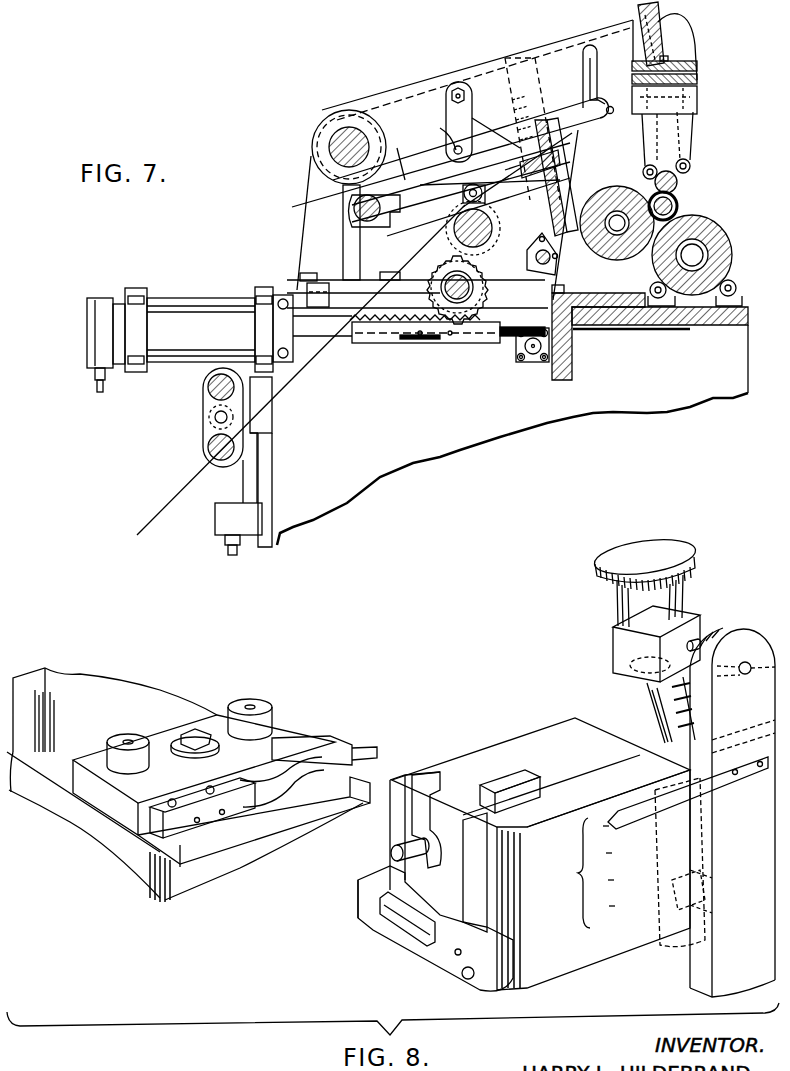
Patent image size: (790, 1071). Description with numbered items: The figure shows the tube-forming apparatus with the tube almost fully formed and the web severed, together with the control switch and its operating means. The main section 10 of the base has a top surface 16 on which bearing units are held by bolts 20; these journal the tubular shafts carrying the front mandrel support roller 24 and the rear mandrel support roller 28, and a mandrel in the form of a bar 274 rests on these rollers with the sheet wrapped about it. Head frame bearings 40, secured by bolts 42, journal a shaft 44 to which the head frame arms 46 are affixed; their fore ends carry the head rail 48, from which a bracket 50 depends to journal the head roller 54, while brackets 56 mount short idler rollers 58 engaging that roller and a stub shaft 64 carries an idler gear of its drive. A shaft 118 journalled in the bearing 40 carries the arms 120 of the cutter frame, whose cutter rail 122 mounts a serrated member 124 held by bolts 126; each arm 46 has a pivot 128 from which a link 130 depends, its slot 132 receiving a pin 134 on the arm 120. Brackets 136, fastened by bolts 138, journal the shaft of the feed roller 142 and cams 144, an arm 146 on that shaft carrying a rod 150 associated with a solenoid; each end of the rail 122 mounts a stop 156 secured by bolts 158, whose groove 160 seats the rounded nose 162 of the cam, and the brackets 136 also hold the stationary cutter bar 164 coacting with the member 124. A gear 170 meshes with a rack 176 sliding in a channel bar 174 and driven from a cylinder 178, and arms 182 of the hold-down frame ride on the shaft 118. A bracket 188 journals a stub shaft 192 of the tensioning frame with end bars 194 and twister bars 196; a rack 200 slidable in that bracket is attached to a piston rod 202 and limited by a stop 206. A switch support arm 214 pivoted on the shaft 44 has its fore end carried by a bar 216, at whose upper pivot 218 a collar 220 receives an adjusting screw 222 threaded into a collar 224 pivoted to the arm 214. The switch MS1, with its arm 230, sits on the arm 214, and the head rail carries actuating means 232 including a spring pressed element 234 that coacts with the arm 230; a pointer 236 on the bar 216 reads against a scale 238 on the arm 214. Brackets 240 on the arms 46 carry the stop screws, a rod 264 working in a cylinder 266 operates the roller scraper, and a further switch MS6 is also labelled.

In FIG. 7, the main section 10 is at (398, 416).
In FIG. 7, the top surface 16 is at (694, 325).
In FIG. 7, the bolts 20 is at (567, 291).
In FIG. 7, the front mandrel support roller 24 is at (724, 237).
In FIG. 7, the rear mandrel support roller 28 is at (619, 192).
In FIG. 7, the head frame bearings 40 is at (306, 207).
In FIG. 7, the bolts 42 is at (310, 273).
In FIG. 7, the shaft 44 is at (318, 142).
In FIG. 7, the head frame arms 46 is at (419, 93).
In FIG. 7, the head rail 48 is at (698, 77).
In FIG. 8, the head rail 48 is at (68, 822).
In FIG. 7, the bracket 50 is at (700, 145).
In FIG. 7, the head roller 54 is at (680, 183).
In FIG. 7, the brackets 56 is at (703, 125).
In FIG. 7, the short idler rollers 58 is at (697, 170).
In FIG. 7, the stub shaft 64 is at (553, 175).
In FIG. 7, the shaft 118 is at (356, 219).
In FIG. 7, the arms of cutter frame 120 is at (364, 232).
In FIG. 7, the cutter rail 122 is at (514, 199).
In FIG. 7, the member having a serrated cutting edge 124 is at (562, 180).
In FIG. 7, the bolts 126 is at (558, 164).
In FIG. 7, the pivot 128 is at (459, 80).
In FIG. 7, the link 130 is at (461, 173).
In FIG. 7, the slot 132 is at (440, 128).
In FIG. 7, the pin 134 is at (440, 165).
In FIG. 7, the brackets 136 is at (515, 279).
In FIG. 7, the bolts 138 is at (516, 350).
In FIG. 7, the feed roller 142 is at (487, 238).
In FIG. 7, the cams 144 is at (496, 124).
In FIG. 7, the arm 146 is at (407, 282).
In FIG. 7, the rod 150 is at (477, 166).
In FIG. 7, the stop 156 is at (453, 147).
In FIG. 7, the bolts 158 is at (556, 148).
In FIG. 7, the groove 160 is at (489, 124).
In FIG. 7, the rounded nose 162 is at (457, 122).
In FIG. 7, the stationary cutter bar 164 is at (542, 254).
In FIG. 7, the gear 170 is at (463, 309).
In FIG. 7, the channel bar 174 is at (389, 343).
In FIG. 7, the rack 176 is at (346, 332).
In FIG. 7, the cylinder 178 is at (202, 312).
In FIG. 7, the arms of hold-down frame 182 is at (352, 203).
In FIG. 7, the bracket 188 is at (267, 419).
In FIG. 7, the stub shaft 192 is at (214, 417).
In FIG. 7, the end bars 194 is at (206, 388).
In FIG. 7, the twister bars 196 is at (210, 398).
In FIG. 7, the rack 200 is at (257, 470).
In FIG. 7, the rod 202 is at (229, 553).
In FIG. 7, the stop 206 is at (236, 488).
In FIG. 7, the switch support arm 214 is at (561, 62).
In FIG. 8, the switch support arm 214 is at (588, 953).
In FIG. 8, the bar 216 is at (690, 965).
In FIG. 8, the pivot 218 is at (747, 663).
In FIG. 8, the collar 220 is at (697, 625).
In FIG. 8, the adjusting screw 222 is at (673, 548).
In FIG. 8, the collar 224 is at (684, 873).
In FIG. 7, the switch arm 230 is at (608, 52).
In FIG. 8, the switch arm 230 is at (392, 847).
In FIG. 8, the switch arm actuating means 232 is at (295, 684).
In FIG. 7, the spring pressed element 234 is at (625, 108).
In FIG. 8, the spring pressed element 234 is at (378, 754).
In FIG. 8, the pointer 236 is at (618, 790).
In FIG. 8, the scale 238 is at (579, 873).
In FIG. 7, the brackets 240 is at (517, 60).
In FIG. 7, the rod 264 is at (531, 350).
In FIG. 7, the cylinder 266 is at (536, 357).
In FIG. 7, the mandrel bar 274 is at (683, 205).
In FIG. 7, the microswitch MS6 is at (305, 292).
In FIG. 8, the switch MS1 is at (510, 762).